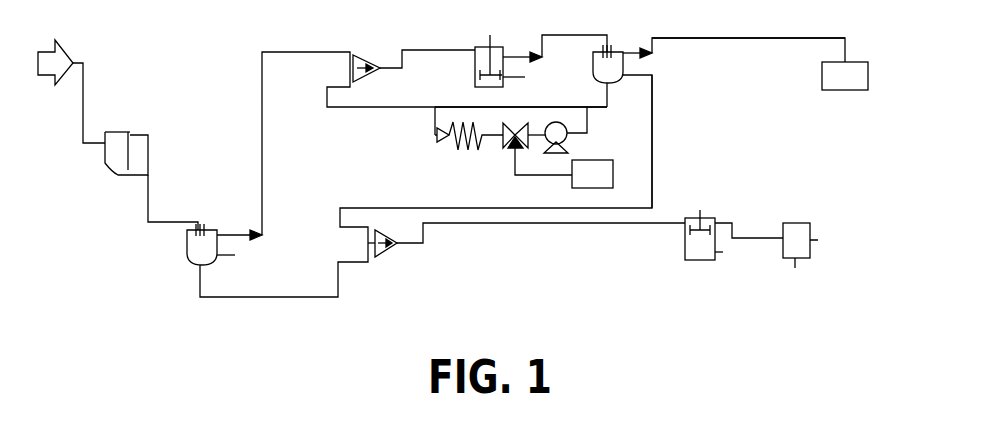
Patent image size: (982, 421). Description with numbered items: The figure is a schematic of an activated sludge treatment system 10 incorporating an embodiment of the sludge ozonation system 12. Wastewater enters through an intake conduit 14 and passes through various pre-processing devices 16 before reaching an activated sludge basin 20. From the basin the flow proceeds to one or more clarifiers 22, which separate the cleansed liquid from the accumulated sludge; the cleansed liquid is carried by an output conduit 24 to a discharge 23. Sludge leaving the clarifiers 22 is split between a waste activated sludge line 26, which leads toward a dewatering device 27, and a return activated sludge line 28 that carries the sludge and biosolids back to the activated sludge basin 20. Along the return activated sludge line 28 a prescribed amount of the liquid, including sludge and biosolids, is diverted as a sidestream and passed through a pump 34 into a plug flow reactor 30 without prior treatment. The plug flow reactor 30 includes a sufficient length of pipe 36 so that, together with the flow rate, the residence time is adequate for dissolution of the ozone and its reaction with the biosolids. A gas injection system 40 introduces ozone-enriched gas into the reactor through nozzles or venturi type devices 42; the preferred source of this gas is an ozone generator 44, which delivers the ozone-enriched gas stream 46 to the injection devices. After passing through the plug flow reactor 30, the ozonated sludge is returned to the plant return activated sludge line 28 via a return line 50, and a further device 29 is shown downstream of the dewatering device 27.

The activated sludge treatment system 10 is at (92, 260).
The sludge ozonation system 12 is at (432, 156).
The intake conduit 14 is at (83, 97).
The pre-processing devices 16 is at (112, 167).
The activated sludge basin 20 is at (497, 43).
The clarifiers 22 is at (188, 262).
The discharge 23 is at (857, 61).
The output conduit 24 is at (732, 40).
The waste activated sludge line 26 is at (653, 155).
The dewatering device 27 is at (685, 251).
The return activated sludge line 28 is at (557, 107).
The outlet device 29 is at (805, 229).
The plug flow reactor 30 is at (488, 158).
The pump 34 is at (563, 124).
The pipe 36 is at (438, 127).
The gas injection system 40 is at (596, 147).
The nozzles or venturi type devices 42 is at (515, 122).
The ozone generator 44 is at (572, 184).
The ozone-enriched gas stream 46 is at (530, 177).
The return line 50 is at (432, 115).